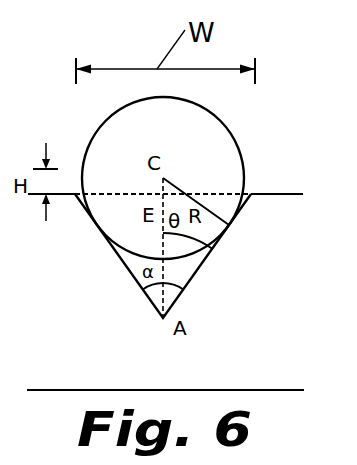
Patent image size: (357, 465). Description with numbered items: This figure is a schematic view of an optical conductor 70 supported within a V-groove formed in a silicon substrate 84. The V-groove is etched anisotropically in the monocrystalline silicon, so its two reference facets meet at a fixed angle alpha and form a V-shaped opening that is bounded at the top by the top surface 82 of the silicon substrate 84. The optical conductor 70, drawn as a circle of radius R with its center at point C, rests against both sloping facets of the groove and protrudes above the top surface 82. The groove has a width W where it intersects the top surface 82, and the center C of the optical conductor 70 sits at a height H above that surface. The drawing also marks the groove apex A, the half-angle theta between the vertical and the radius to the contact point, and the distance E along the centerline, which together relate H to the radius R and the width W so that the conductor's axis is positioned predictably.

The optical conductor 70 is at (237, 142).
The top surface 82 is at (277, 194).
The silicon substrate 84 is at (72, 317).